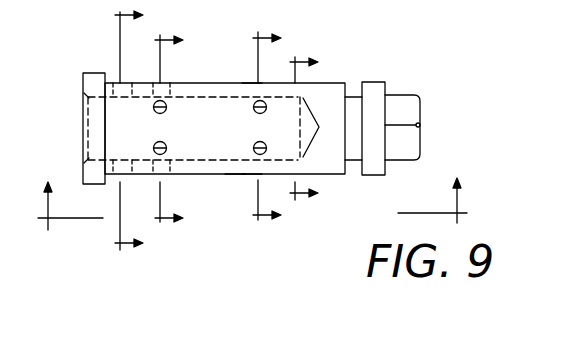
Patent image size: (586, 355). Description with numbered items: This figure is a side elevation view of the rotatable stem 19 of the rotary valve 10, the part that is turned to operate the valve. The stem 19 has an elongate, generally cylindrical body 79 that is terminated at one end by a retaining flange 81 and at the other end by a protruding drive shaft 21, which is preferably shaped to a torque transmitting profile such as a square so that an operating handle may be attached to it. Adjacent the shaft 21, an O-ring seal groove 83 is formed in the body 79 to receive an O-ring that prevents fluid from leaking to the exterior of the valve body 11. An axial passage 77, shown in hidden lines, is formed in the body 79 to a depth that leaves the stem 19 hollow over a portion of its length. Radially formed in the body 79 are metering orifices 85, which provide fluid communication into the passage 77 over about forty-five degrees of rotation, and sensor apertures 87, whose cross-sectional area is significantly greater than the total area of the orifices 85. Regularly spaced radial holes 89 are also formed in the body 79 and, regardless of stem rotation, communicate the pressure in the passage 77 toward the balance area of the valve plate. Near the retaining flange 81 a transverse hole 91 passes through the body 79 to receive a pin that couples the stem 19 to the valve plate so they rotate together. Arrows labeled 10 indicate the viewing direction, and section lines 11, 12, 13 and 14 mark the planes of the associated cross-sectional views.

The valve 10 is at (255, 190).
The body 11 is at (317, 128).
The section line 12- 12 is at (282, 129).
The section line 13- 13 is at (182, 130).
The section line 14- 14 is at (143, 130).
The stem 19 is at (203, 174).
The shaft 21 is at (402, 95).
The axial passage 77 is at (200, 115).
The body 79 is at (235, 174).
The retaining flange 81 is at (97, 72).
The O-ring seal groove 83 is at (352, 88).
The metering orifices 85 is at (253, 143).
The sensor apertures 87 is at (252, 83).
The radial holes 89 is at (158, 154).
The transverse hole 91 is at (118, 83).